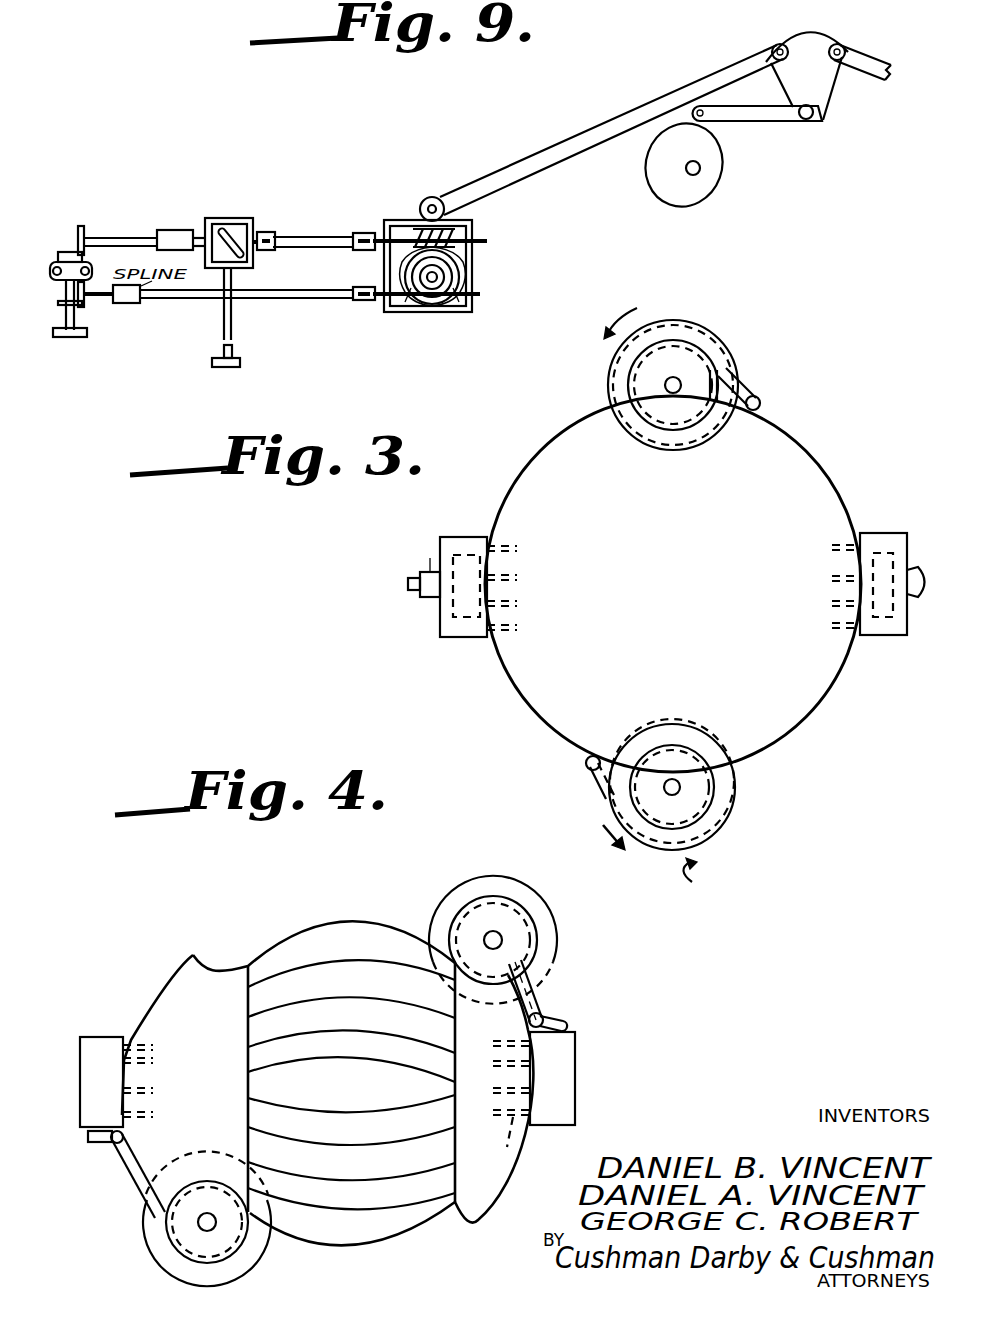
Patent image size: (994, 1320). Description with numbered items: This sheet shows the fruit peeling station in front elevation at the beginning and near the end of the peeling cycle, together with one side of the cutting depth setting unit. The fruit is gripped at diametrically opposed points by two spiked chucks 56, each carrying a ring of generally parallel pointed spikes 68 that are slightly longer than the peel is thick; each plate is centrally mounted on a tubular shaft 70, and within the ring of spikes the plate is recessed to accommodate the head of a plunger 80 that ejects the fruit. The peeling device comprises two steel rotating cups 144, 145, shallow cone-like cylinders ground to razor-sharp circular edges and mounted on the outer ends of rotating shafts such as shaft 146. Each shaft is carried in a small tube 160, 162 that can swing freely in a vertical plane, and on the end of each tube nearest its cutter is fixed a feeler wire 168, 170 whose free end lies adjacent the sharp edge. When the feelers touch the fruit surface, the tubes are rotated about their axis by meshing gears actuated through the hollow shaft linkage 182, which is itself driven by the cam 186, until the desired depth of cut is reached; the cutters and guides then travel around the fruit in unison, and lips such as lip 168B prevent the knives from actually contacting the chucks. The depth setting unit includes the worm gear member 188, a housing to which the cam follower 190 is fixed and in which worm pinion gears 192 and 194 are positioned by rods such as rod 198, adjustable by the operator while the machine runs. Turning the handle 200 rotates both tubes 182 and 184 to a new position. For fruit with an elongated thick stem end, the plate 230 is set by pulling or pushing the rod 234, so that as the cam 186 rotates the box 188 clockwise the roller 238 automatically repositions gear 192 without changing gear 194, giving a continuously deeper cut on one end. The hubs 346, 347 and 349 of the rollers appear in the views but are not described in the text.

In FIG. 9, the worm pinion gear 194 is at (345, 227).
In FIG. 9, the rod 198 is at (333, 284).
In FIG. 9, the handle 200 is at (68, 338).
In FIG. 9, the plate 230 is at (240, 207).
In FIG. 9, the roller 238 is at (248, 245).
In FIG. 9, the rod 234 is at (233, 325).
In FIG. 9, the worm gear member 188 is at (475, 258).
In FIG. 9, the hollow shaft linkage 182 is at (437, 277).
In FIG. 9, the tube 184 is at (466, 290).
In FIG. 9, the worm pinion gear 192 is at (472, 233).
In FIG. 9, the cam follower 190 is at (618, 127).
In FIG. 9, the cam 186 is at (712, 171).
In FIG. 3, the rotating cup 144 is at (722, 340).
In FIG. 4, the rotating cup 144 is at (517, 887).
In FIG. 3, the rotating shaft 146 is at (740, 362).
In FIG. 4, the rotating shaft 146 is at (560, 951).
In FIG. 3, the tube 160 is at (708, 300).
In FIG. 4, the tube 160 is at (540, 969).
In FIG. 3, the roller shaft 346 is at (665, 386).
In FIG. 4, the roller shaft 346 is at (503, 938).
In FIG. 3, the feeler wire 168 is at (768, 403).
In FIG. 4, the feeler wire 168 is at (542, 1018).
In FIG. 3, the spiked chuck 56 is at (476, 536).
In FIG. 4, the spiked chuck 56 is at (578, 1056).
In FIG. 3, the plunger 80 is at (436, 563).
In FIG. 3, the tubular shaft 70 is at (431, 600).
In FIG. 3, the spikes 68 is at (517, 603).
In FIG. 4, the spikes 68 is at (523, 1151).
In FIG. 3, the lower roller shaft 347 is at (680, 787).
In FIG. 3, the rotating cup 145 is at (735, 808).
In FIG. 4, the rotating cup 145 is at (250, 1265).
In FIG. 3, the tube 162 is at (728, 829).
In FIG. 4, the tube 162 is at (263, 1225).
In FIG. 4, the lip 168B is at (566, 1026).
In FIG. 4, the feeler wire 170 is at (128, 1186).
In FIG. 4, the lower roller shaft 349 is at (198, 1226).